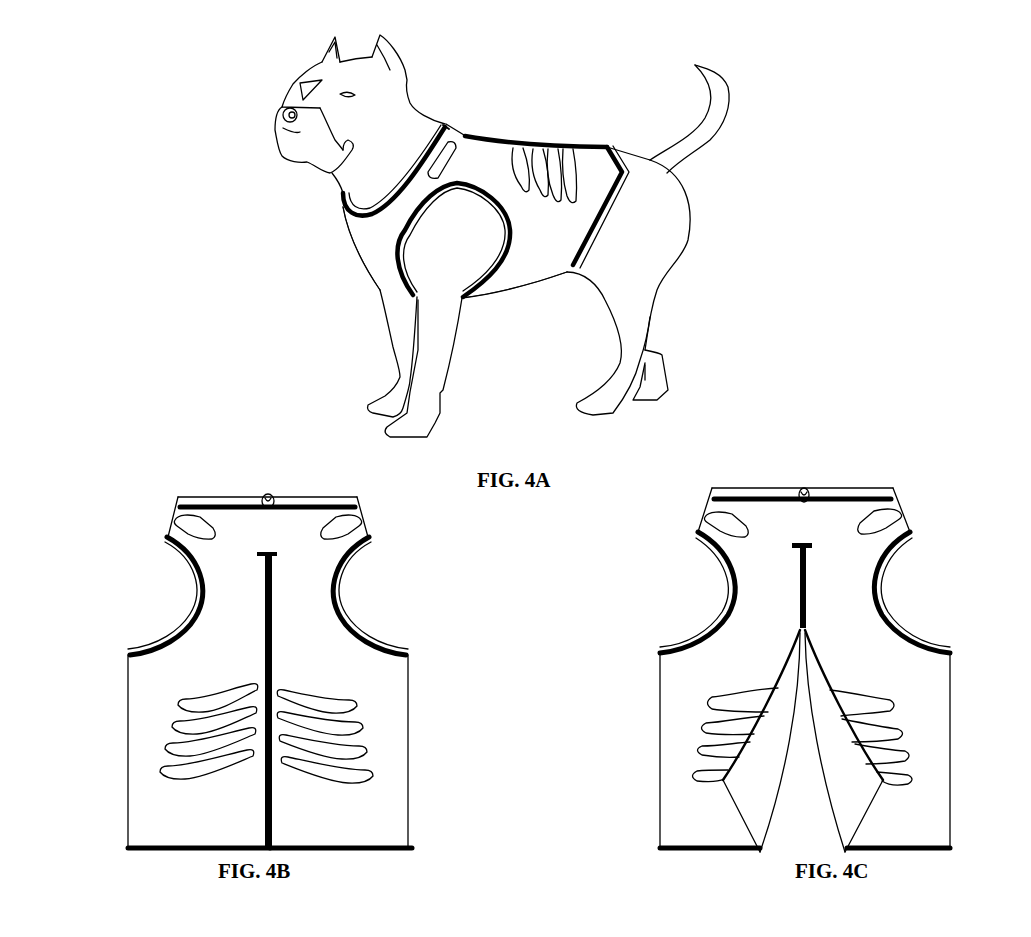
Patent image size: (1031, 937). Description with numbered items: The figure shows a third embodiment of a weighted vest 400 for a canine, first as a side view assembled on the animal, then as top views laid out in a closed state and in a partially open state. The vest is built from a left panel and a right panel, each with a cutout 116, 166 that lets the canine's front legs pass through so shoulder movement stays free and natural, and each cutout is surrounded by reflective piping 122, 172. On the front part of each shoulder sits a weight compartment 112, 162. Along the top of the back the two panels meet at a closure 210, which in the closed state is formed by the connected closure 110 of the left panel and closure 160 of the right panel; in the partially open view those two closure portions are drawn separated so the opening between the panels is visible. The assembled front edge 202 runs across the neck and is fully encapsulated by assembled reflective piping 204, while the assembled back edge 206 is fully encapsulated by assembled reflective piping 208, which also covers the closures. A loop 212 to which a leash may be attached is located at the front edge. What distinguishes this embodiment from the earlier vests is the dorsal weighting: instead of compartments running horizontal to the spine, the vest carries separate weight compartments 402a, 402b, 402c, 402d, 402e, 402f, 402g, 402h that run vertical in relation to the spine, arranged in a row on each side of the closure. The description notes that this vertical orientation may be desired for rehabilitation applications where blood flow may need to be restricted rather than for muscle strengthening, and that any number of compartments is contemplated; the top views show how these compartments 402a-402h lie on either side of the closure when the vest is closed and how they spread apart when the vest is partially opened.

In FIG. 4A, the weighted vest 400 is at (332, 242).
In FIG. 4C, the closure 110 is at (785, 653).
In FIG. 4A, the weight compartment 112 is at (454, 145).
In FIG. 4B, the weight compartment 112 is at (173, 525).
In FIG. 4C, the weight compartment 112 is at (715, 520).
In FIG. 4A, the cutout 116 is at (400, 267).
In FIG. 4B, the cutout 116 is at (190, 572).
In FIG. 4C, the cutout 116 is at (717, 560).
In FIG. 4A, the reflective piping 122 is at (490, 290).
In FIG. 4B, the reflective piping 122 is at (193, 612).
In FIG. 4C, the reflective piping 122 is at (708, 647).
In FIG. 4C, the closure 160 is at (808, 633).
In FIG. 4B, the weight compartment 162 is at (335, 530).
In FIG. 4C, the weight compartment 162 is at (885, 520).
In FIG. 4B, the cutout 166 is at (345, 577).
In FIG. 4C, the cutout 166 is at (875, 587).
In FIG. 4B, the reflective piping 172 is at (363, 642).
In FIG. 4C, the reflective piping 172 is at (902, 630).
In FIG. 4A, the assembled front edge 202 is at (342, 193).
In FIG. 4B, the assembled front edge 202 is at (212, 497).
In FIG. 4C, the assembled front edge 202 is at (840, 488).
In FIG. 4A, the assembled reflective piping 204 is at (343, 207).
In FIG. 4B, the assembled reflective piping 204 is at (230, 504).
In FIG. 4C, the assembled reflective piping 204 is at (872, 502).
In FIG. 4A, the assembled back edge 206 is at (600, 229).
In FIG. 4B, the assembled back edge 206 is at (412, 850).
In FIG. 4C, the assembled back edge 206 is at (660, 851).
In FIG. 4A, the assembled reflective piping 208 is at (565, 273).
In FIG. 4B, the assembled reflective piping 208 is at (168, 840).
In FIG. 4C, the assembled reflective piping 208 is at (903, 838).
In FIG. 4A, the closure 210 is at (527, 141).
In FIG. 4B, the closure 210 is at (275, 623).
In FIG. 4C, the closure 210 is at (808, 560).
In FIG. 4A, the loop 212 is at (447, 127).
In FIG. 4B, the loop 212 is at (267, 496).
In FIG. 4C, the loop 212 is at (802, 489).
In FIG. 4A, the weight compartment 402a is at (514, 146).
In FIG. 4B, the weight compartment 402a is at (183, 707).
In FIG. 4C, the weight compartment 402a is at (727, 700).
In FIG. 4A, the weight compartment 402b is at (532, 155).
In FIG. 4B, the weight compartment 402b is at (185, 724).
In FIG. 4C, the weight compartment 402b is at (712, 728).
In FIG. 4A, the weight compartment 402c is at (555, 161).
In FIG. 4B, the weight compartment 402c is at (187, 745).
In FIG. 4C, the weight compartment 402c is at (717, 752).
In FIG. 4A, the weight compartment 402d is at (566, 162).
In FIG. 4B, the weight compartment 402d is at (182, 770).
In FIG. 4C, the weight compartment 402d is at (713, 777).
In FIG. 4B, the weight compartment 402e is at (340, 703).
In FIG. 4C, the weight compartment 402e is at (868, 710).
In FIG. 4B, the weight compartment 402f is at (347, 728).
In FIG. 4C, the weight compartment 402f is at (880, 730).
In FIG. 4B, the weight compartment 402g is at (355, 752).
In FIG. 4C, the weight compartment 402g is at (890, 752).
In FIG. 4B, the weight compartment 402h is at (360, 777).
In FIG. 4C, the weight compartment 402h is at (885, 782).